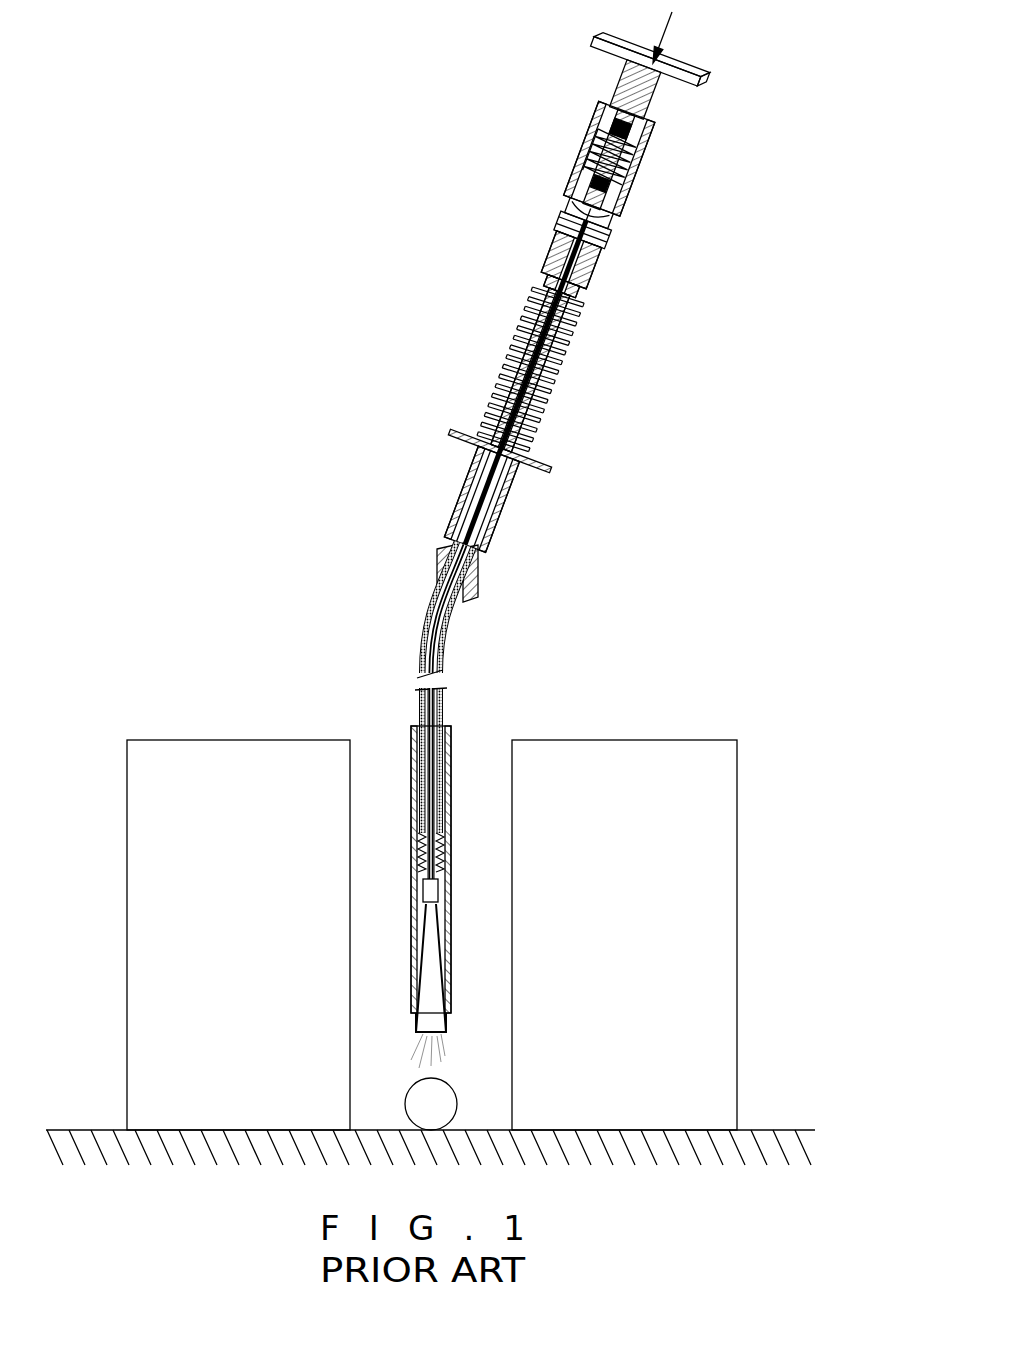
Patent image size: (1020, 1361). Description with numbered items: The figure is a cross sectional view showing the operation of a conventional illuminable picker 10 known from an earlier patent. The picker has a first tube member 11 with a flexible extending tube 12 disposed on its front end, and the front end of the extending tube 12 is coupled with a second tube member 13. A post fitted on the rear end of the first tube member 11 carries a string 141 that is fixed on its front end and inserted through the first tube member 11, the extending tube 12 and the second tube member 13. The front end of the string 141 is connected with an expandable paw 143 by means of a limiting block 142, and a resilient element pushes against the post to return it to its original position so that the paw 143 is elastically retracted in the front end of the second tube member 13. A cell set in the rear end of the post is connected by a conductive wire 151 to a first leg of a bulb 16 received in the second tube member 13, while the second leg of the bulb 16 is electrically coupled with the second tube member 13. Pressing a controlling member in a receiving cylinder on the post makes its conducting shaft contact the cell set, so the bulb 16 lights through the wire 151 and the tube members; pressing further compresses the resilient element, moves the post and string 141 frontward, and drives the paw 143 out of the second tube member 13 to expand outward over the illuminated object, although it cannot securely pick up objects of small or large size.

The illuminable picker 10 is at (532, 531).
The first tube member 11 is at (437, 557).
The flexible extending tube 12 is at (452, 613).
The second tube member 13 is at (410, 737).
The string 141 is at (432, 770).
The limiting block 142 is at (438, 890).
The expandable paw 143 is at (450, 1028).
The conductive wire 151 is at (420, 653).
The bulb 16 is at (416, 885).